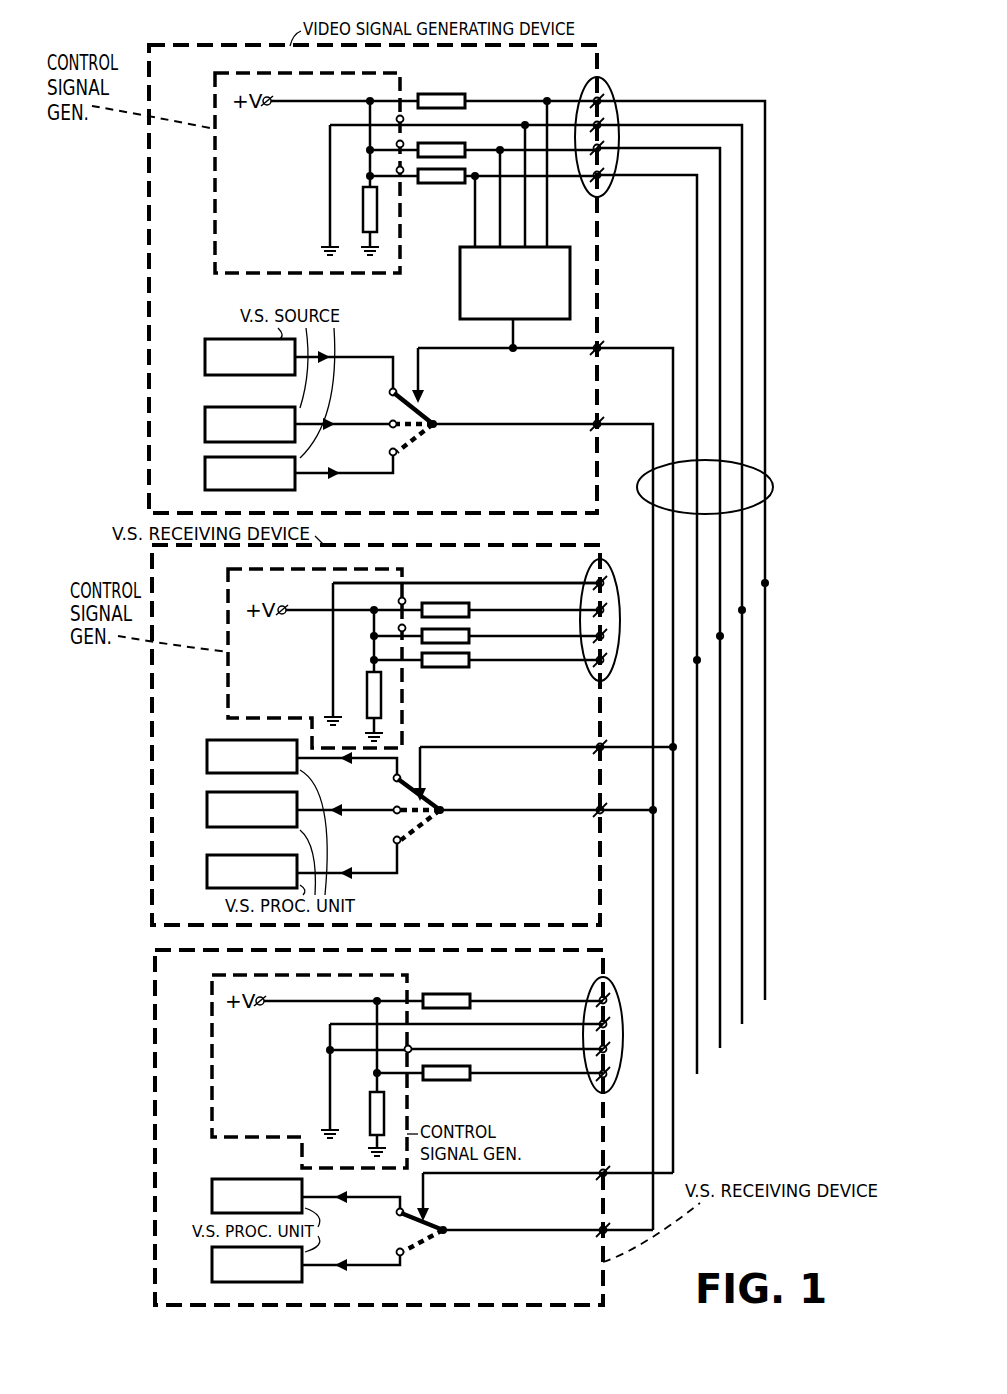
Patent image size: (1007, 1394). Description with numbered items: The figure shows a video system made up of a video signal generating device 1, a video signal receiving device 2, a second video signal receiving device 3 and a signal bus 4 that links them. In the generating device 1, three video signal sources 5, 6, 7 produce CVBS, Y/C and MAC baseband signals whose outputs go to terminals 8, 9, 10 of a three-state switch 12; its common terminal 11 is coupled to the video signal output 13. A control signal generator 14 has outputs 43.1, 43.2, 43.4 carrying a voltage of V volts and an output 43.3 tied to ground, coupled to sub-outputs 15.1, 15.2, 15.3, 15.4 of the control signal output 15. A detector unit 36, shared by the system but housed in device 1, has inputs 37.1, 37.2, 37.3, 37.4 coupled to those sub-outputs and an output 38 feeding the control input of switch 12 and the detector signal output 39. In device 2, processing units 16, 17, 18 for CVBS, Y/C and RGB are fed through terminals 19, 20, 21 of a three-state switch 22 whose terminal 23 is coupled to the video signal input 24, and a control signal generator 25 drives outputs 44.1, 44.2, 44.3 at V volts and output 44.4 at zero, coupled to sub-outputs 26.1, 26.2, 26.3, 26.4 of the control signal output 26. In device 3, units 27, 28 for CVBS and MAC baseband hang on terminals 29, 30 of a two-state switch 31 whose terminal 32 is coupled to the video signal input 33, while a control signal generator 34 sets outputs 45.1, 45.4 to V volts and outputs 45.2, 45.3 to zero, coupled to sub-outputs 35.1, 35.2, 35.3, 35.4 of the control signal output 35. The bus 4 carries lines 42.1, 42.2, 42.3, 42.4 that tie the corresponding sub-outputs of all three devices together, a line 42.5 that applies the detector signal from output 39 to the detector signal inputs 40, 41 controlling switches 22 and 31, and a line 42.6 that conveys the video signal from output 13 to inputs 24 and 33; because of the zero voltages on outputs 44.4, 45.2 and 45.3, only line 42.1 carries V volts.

The video signal generating device 1 is at (244, 46).
The video signal receiving device 2 is at (383, 546).
The video signal receiving device 3 is at (577, 950).
The signal bus 4 is at (773, 487).
The video signal source 5 is at (205, 359).
The video signal source 6 is at (205, 426).
The video signal source 7 is at (205, 475).
The terminal 8 is at (389, 391).
The terminal 9 is at (389, 423).
The terminal 10 is at (390, 454).
The terminal 11 is at (436, 422).
The three-state switch 12 is at (415, 440).
The video signal output 13 is at (594, 430).
The control signal generator 14 is at (215, 112).
The control signal output 15 is at (588, 90).
The sub-output 15.1 is at (604, 180).
The sub-output 15.2 is at (604, 150).
The sub-output 15.3 is at (604, 121).
The sub-output 15.4 is at (604, 96).
The video signal processing unit 16 is at (207, 758).
The video signal processing unit 17 is at (207, 811).
The video signal processing unit 18 is at (207, 874).
The terminal 19 is at (393, 778).
The terminal 20 is at (393, 814).
The terminal 21 is at (401, 843).
The three-state switch 22 is at (425, 826).
The terminal 23 is at (442, 806).
The video signal input 24 is at (605, 813).
The control signal generator 25 is at (228, 619).
The control signal output 26 is at (606, 582).
The sub-output 26.1 is at (594, 666).
The sub-output 26.2 is at (594, 633).
The sub-output 26.3 is at (594, 607).
The sub-output 26.4 is at (594, 580).
The video signal processing unit 27 is at (212, 1199).
The video signal processing unit 28 is at (212, 1267).
The terminal 29 is at (396, 1212).
The terminal 30 is at (396, 1252).
The two-state switch 31 is at (415, 1258).
The terminal 32 is at (445, 1227).
The video signal input 33 is at (600, 1227).
The control signal generator 34 is at (212, 1074).
The control signal output 35 is at (608, 998).
The sub-output 35.1 is at (597, 1080).
The sub-output 35.2 is at (597, 1049).
The sub-output 35.3 is at (597, 1024).
The sub-output 35.4 is at (597, 995).
The detector unit 36 is at (460, 279).
The input 37.1 is at (500, 246).
The input 37.2 is at (475, 246).
The input 37.3 is at (526, 246).
The input 37.4 is at (547, 247).
The output 38 is at (515, 342).
The detector signal output 39 is at (604, 348).
The detector signal input 40 is at (604, 751).
The detector signal input 41 is at (600, 1170).
The line 42.1 is at (696, 270).
The line 42.2 is at (719, 245).
The line 42.3 is at (743, 269).
The line 42.4 is at (766, 245).
The line 42.5 is at (672, 385).
The line 42.6 is at (654, 440).
The output 43.1 is at (400, 170).
The output 43.2 is at (400, 144).
The output 43.3 is at (396, 119).
The output 43.4 is at (402, 101).
The output 44.1 is at (403, 663).
The output 44.2 is at (398, 628).
The output 44.3 is at (398, 601).
The output 44.4 is at (403, 584).
The output 45.1 is at (408, 1075).
The output 45.2 is at (404, 1050).
The output 45.3 is at (408, 1025).
The output 45.4 is at (408, 1001).